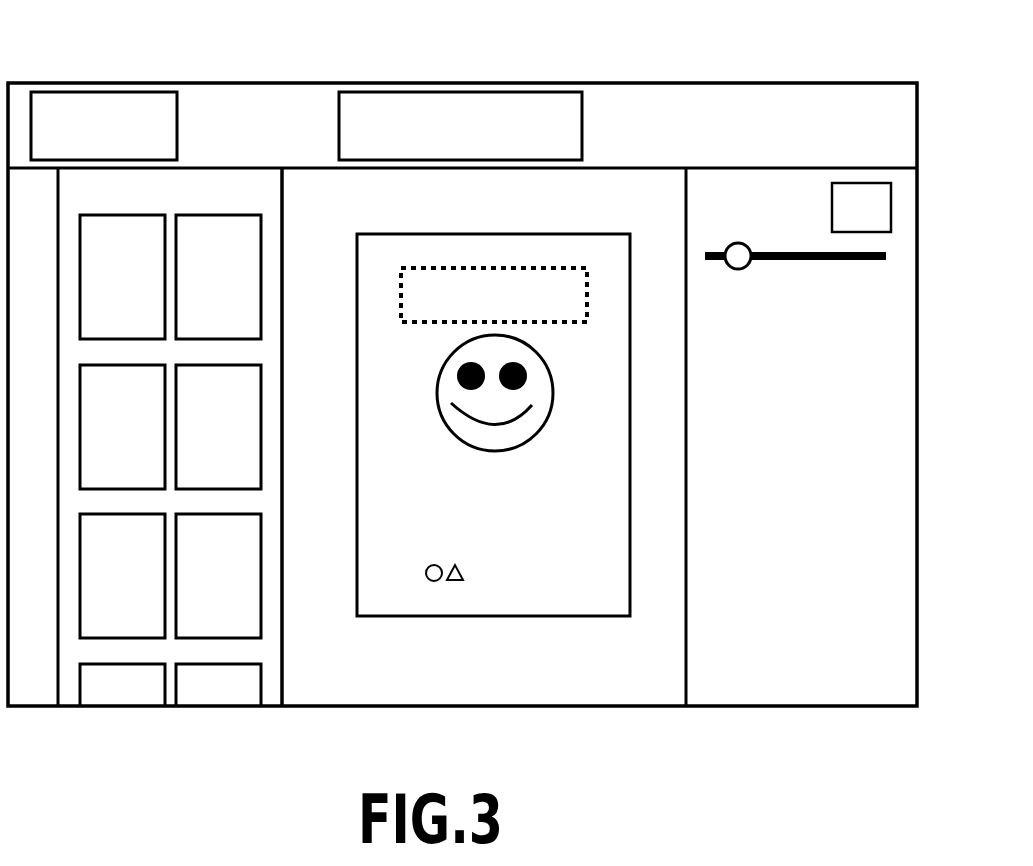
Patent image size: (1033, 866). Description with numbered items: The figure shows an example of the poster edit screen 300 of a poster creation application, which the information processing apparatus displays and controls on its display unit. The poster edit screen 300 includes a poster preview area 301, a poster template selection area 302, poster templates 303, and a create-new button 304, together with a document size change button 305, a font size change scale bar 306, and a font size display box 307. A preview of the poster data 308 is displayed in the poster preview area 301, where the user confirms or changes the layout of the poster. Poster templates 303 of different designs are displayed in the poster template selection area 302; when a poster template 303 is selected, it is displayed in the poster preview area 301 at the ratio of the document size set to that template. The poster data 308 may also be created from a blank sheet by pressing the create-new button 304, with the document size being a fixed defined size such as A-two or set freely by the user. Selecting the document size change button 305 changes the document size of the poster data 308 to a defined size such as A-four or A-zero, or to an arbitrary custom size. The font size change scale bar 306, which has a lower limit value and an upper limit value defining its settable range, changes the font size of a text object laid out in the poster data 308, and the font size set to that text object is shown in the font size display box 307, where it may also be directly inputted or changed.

The poster edit screen 300 is at (648, 83).
The poster preview area 301 is at (303, 184).
The poster template selection area 302 is at (270, 680).
The poster template 303 is at (243, 602).
The create-new button 304 is at (105, 93).
The document size change button 305 is at (468, 93).
The font size change scale bar 306 is at (812, 258).
The font size display box 307 is at (860, 183).
The poster data 308 is at (380, 248).